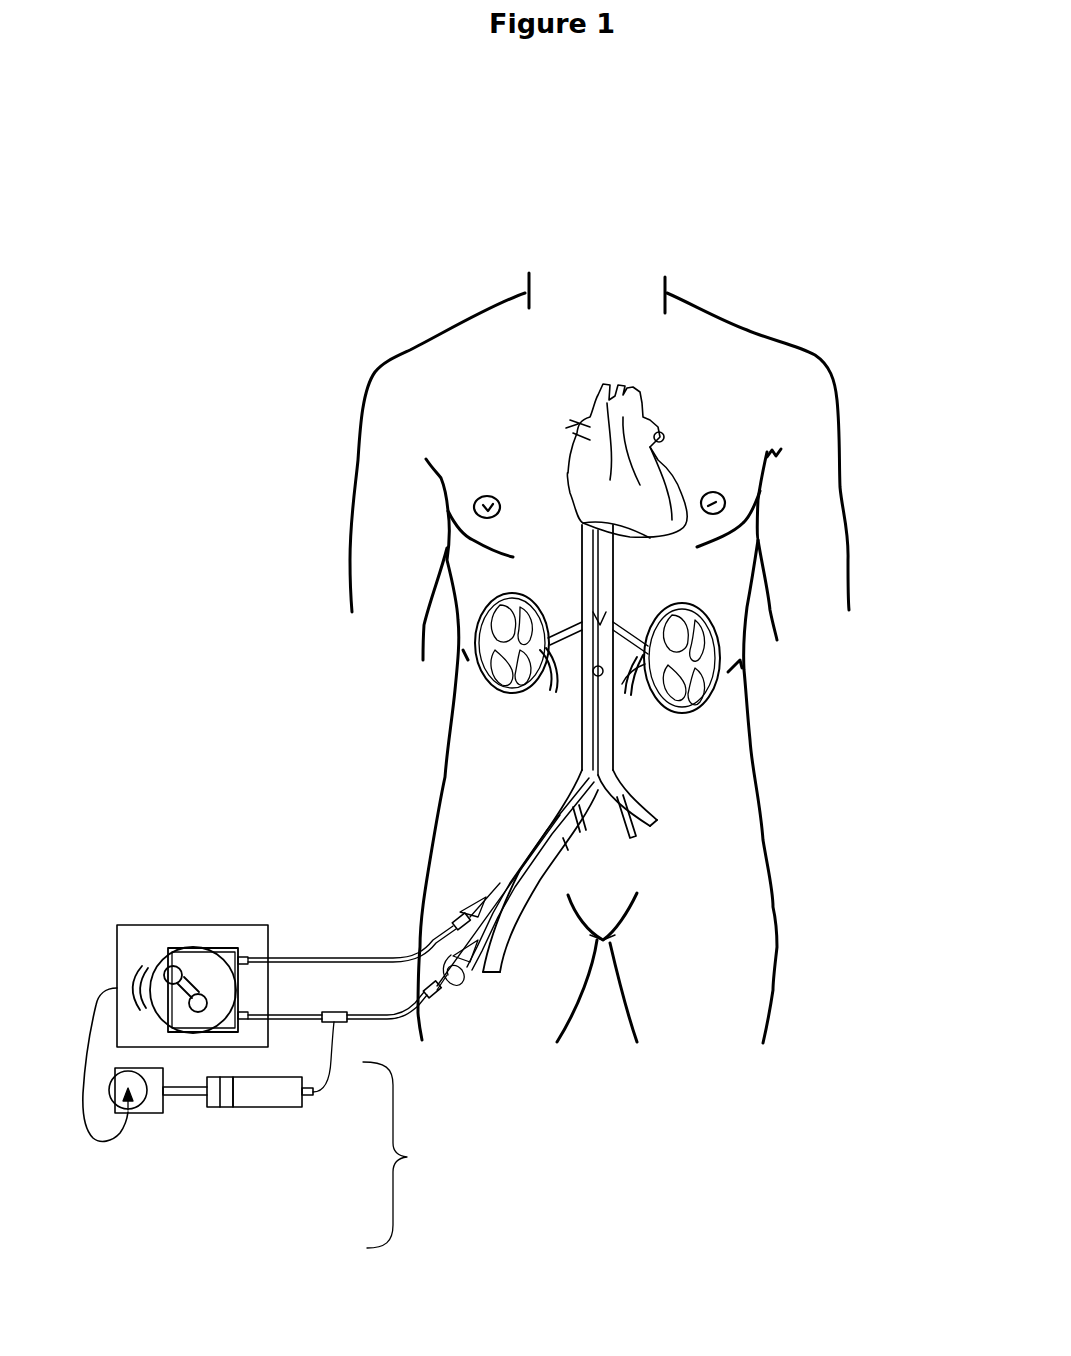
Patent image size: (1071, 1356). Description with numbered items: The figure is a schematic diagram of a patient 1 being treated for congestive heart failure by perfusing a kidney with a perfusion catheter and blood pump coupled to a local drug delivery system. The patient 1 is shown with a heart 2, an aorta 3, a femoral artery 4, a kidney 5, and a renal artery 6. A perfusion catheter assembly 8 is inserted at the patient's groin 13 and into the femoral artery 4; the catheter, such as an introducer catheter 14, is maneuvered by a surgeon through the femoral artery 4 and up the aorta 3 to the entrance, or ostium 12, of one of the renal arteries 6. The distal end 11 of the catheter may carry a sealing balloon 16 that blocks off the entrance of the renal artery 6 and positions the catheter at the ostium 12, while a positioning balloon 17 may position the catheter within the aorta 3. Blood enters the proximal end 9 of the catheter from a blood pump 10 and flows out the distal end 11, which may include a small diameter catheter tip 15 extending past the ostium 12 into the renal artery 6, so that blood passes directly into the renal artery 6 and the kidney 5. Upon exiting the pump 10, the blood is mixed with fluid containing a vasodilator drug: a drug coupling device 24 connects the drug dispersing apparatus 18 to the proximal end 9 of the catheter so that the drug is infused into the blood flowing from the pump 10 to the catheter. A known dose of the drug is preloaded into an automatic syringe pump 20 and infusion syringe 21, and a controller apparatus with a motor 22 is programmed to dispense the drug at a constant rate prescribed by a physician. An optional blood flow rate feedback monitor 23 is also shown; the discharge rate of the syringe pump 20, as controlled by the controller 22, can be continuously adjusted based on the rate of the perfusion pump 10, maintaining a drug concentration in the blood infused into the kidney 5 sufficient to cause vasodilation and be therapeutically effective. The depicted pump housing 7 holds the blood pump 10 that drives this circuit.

The patient 1 is at (528, 371).
The heart 2 is at (612, 615).
The aorta 3 is at (590, 640).
The femoral artery 4 is at (543, 832).
The kidney 5 is at (705, 650).
The renal artery 6 is at (615, 618).
The pump console 7 is at (253, 940).
The perfusion catheter assembly 8 is at (593, 772).
The proximal end 9 is at (437, 992).
The blood pump 10 is at (190, 967).
The distal end 11 is at (607, 617).
The ostium 12 is at (622, 688).
The groin 13 is at (605, 940).
The introducer catheter 14 is at (573, 807).
The catheter tip 15 is at (614, 617).
The sealing balloon 16 is at (612, 615).
The positioning balloon 17 is at (598, 668).
The drug dispersing apparatus 18 is at (424, 1155).
The automatic syringe pump 20 is at (142, 1070).
The infusion syringe 21 is at (257, 1092).
The controller apparatus with a motor 22 is at (143, 1093).
The blood flow rate feedback monitor 23 is at (120, 1137).
The drug coupling device 24 is at (348, 1020).